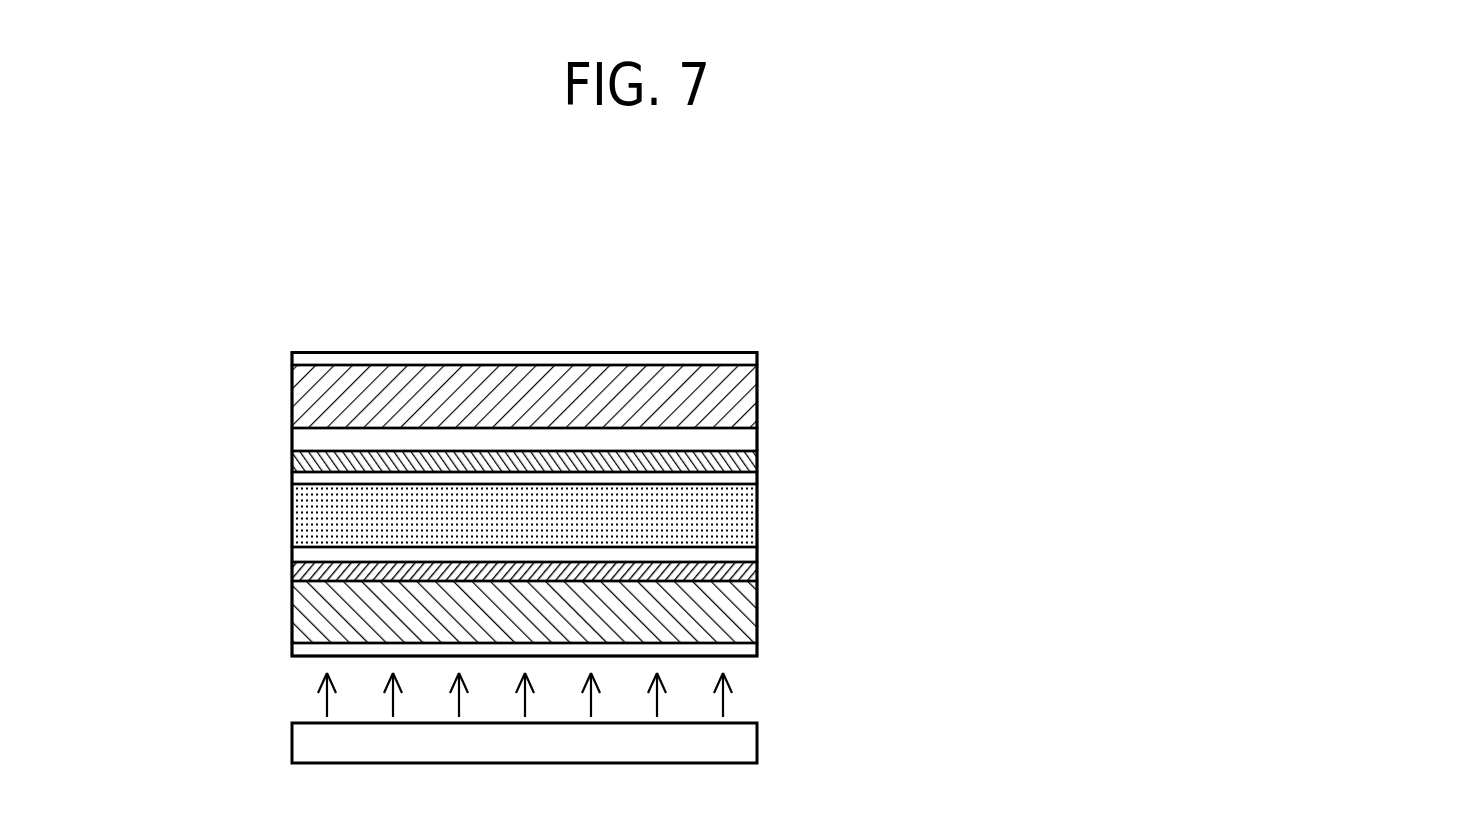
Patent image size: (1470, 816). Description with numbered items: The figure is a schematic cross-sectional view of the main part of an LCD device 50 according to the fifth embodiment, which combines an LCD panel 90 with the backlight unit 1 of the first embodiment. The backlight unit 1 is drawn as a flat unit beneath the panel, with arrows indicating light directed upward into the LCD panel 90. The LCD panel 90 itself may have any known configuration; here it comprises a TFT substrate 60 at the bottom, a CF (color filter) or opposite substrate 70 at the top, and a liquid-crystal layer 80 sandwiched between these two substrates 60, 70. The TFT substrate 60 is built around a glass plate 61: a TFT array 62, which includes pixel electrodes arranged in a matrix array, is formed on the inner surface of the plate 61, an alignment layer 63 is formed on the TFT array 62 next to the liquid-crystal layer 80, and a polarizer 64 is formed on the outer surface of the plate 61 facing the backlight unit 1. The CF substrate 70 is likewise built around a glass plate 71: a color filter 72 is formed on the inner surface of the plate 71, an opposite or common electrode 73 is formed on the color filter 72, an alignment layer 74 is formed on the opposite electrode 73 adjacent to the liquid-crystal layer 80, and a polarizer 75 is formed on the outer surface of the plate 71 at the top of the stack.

The backlight unit 1 is at (745, 745).
The LCD device 50 is at (528, 328).
The TFT substrate 60 is at (1215, 518).
The glass plate 61 is at (745, 616).
The TFT array 62 is at (745, 571).
The alignment layer 63 is at (745, 553).
The polarizer 64 is at (745, 650).
The CF substrate 70 is at (1215, 264).
The glass plate 71 is at (742, 385).
The color filter 72 is at (742, 440).
The opposite electrode 73 is at (742, 459).
The alignment layer 74 is at (742, 478).
The polarizer 75 is at (741, 359).
The liquid-crystal layer 80 is at (744, 512).
The LCD panel 90 is at (273, 353).